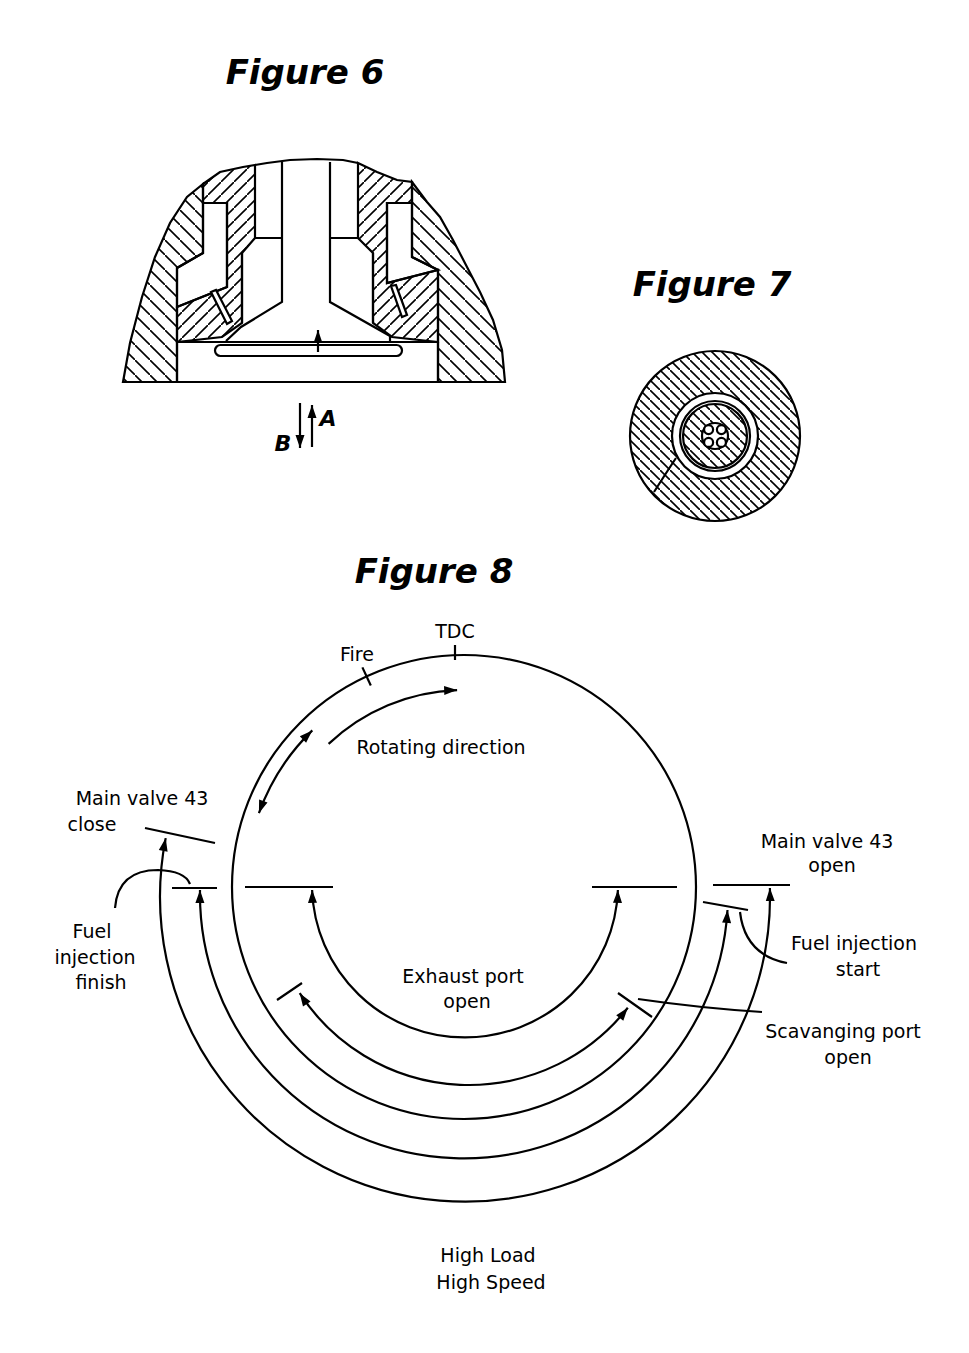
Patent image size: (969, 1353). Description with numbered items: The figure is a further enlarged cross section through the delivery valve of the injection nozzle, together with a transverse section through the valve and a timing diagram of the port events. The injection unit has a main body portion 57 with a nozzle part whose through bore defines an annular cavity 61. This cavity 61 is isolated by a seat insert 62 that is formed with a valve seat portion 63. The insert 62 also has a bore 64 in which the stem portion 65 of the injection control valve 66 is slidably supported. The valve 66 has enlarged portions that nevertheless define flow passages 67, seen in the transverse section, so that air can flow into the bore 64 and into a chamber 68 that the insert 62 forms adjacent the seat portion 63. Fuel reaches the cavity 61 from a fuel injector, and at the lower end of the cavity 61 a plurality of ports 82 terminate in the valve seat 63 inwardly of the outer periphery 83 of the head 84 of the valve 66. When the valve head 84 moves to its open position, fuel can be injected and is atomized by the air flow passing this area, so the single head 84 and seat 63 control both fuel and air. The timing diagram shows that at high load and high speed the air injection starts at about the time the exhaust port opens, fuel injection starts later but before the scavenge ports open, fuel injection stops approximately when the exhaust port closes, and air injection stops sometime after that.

In FIG. 6, the main body portion 57 is at (470, 307).
In FIG. 7, the main body portion 57 is at (733, 373).
In FIG. 6, the annular cavity 61 is at (210, 217).
In FIG. 7, the annular cavity 61 is at (663, 388).
In FIG. 6, the seat insert 62 is at (388, 183).
In FIG. 7, the seat insert 62 is at (747, 403).
In FIG. 6, the valve seat portion 63 is at (403, 341).
In FIG. 6, the bore 64 is at (262, 187).
In FIG. 7, the bore 64 is at (717, 473).
In FIG. 6, the stem portion 65 is at (296, 172).
In FIG. 6, the injection control valve 66 is at (318, 352).
In FIG. 7, the flow passages 67 is at (730, 450).
In FIG. 6, the chamber 68 is at (346, 250).
In FIG. 6, the ports 82 is at (195, 343).
In FIG. 6, the outer periphery 83 is at (216, 346).
In FIG. 6, the head 84 is at (265, 348).